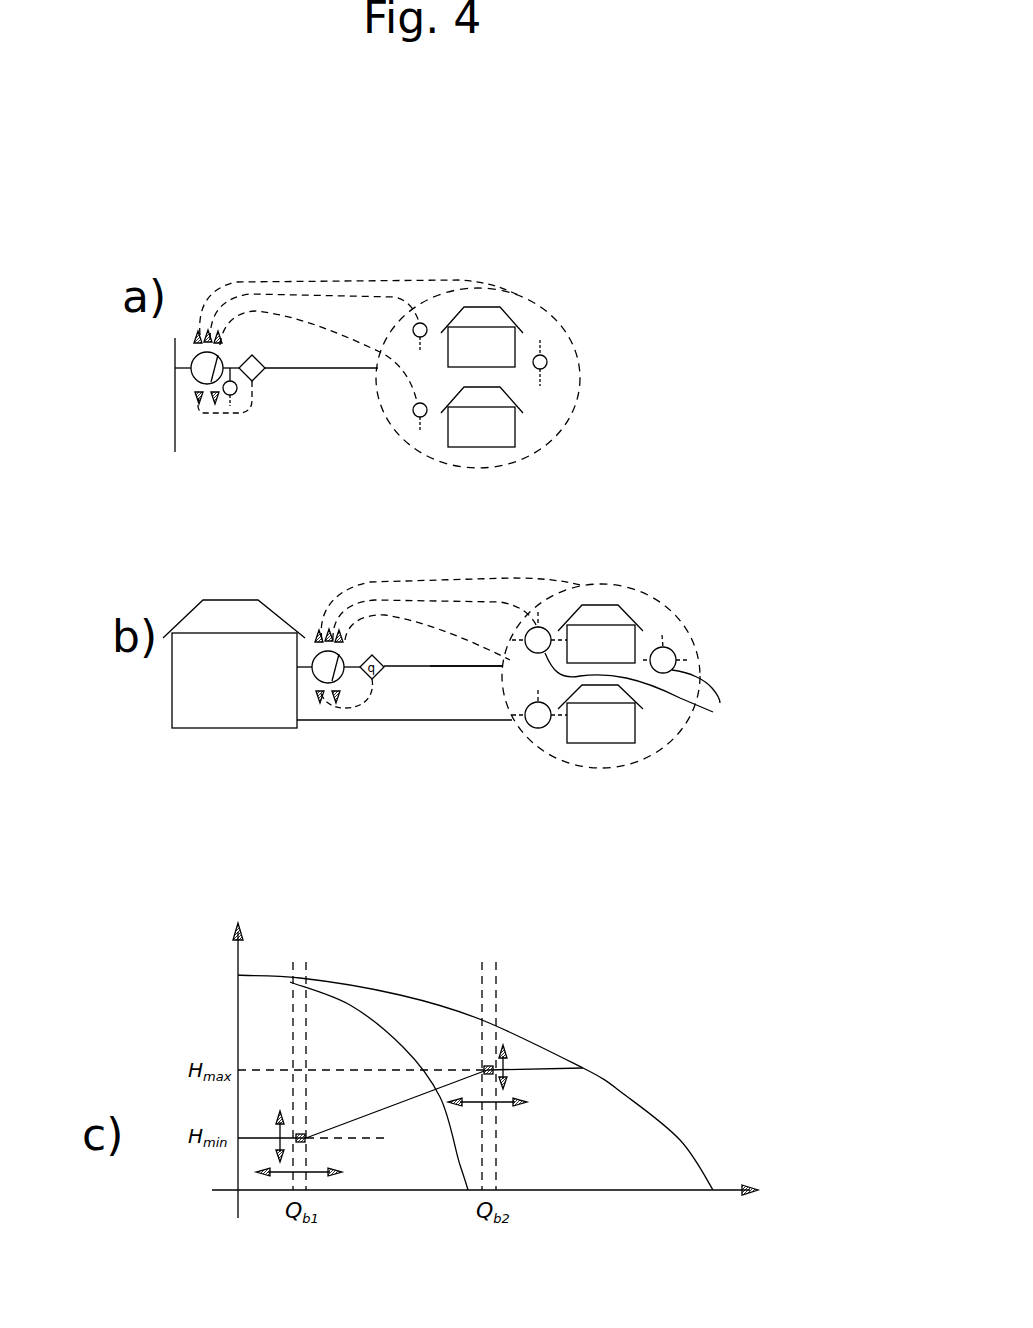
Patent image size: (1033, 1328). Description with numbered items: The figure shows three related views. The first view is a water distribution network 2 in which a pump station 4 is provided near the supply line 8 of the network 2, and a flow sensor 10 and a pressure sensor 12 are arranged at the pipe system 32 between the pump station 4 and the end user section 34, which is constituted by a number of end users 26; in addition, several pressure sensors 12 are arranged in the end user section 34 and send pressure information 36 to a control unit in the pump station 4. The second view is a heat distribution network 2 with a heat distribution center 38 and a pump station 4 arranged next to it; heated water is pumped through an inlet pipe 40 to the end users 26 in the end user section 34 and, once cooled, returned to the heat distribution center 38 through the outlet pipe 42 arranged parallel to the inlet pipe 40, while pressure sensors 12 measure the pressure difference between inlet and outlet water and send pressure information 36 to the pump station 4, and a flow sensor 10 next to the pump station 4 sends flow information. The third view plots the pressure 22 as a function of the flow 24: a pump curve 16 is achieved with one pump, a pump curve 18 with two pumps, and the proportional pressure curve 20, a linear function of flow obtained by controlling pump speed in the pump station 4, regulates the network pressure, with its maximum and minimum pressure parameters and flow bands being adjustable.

In FIG. 4a, the water distribution network 2 is at (333, 237).
In FIG. 4b, the pump station 4 is at (312, 645).
In FIG. 4a, the supply line 8 is at (180, 283).
In FIG. 4a, the flow sensor 10 is at (278, 372).
In FIG. 4b, the flow sensor 10 is at (380, 658).
In FIG. 4a, the pressure sensor 12 is at (413, 330).
In FIG. 4b, the pressure sensor 12 is at (408, 697).
In FIG. 4c, the pump curve 16 is at (349, 1007).
In FIG. 4c, the pump curve 18 is at (625, 1097).
In FIG. 4c, the pump curve 20 is at (383, 1102).
In FIG. 4c, the pressure 22 is at (238, 975).
In FIG. 4c, the flow 24 is at (723, 1188).
In FIG. 4a, the end user 26 is at (478, 432).
In FIG. 4b, the end user 26 is at (633, 648).
In FIG. 4a, the pipe system 32 is at (258, 376).
In FIG. 4a, the end user section 34 is at (517, 276).
In FIG. 4b, the end user section 34 is at (615, 574).
In FIG. 4a, the pressure information 36 is at (353, 297).
In FIG. 4b, the pressure information 36 is at (510, 578).
In FIG. 4b, the heat distribution center 38 is at (230, 617).
In FIG. 4b, the inlet pipe 40 is at (488, 667).
In FIG. 4b, the outlet pipe 42 is at (424, 722).